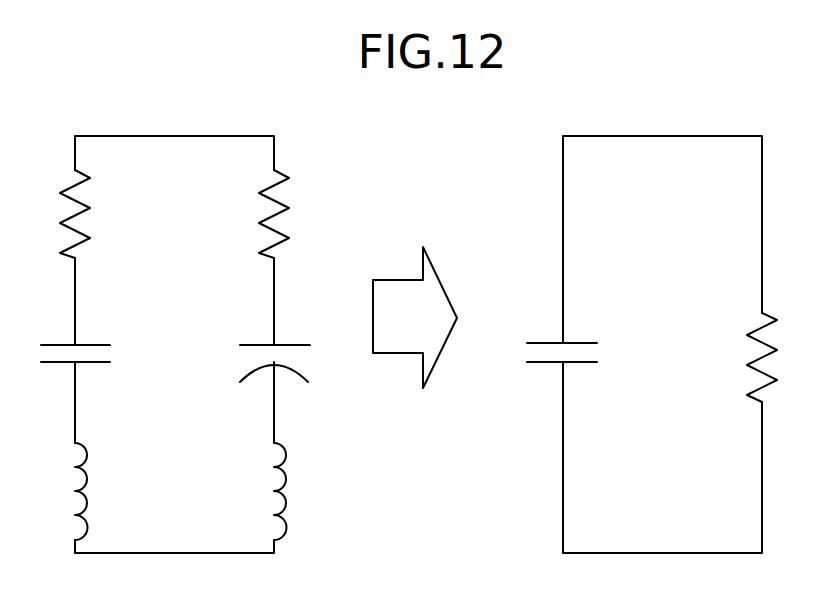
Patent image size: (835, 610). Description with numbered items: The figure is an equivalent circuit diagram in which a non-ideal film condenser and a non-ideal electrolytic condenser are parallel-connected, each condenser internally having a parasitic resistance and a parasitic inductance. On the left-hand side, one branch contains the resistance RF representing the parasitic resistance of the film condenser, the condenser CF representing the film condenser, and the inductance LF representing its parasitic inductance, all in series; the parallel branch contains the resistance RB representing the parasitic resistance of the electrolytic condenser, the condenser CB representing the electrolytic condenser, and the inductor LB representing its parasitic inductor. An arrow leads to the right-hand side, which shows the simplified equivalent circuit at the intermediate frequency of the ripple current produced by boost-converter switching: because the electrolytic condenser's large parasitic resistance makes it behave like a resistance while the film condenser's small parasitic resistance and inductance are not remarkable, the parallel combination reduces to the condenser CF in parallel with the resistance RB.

The resistance RF is at (59, 214).
The condenser CF is at (302, 353).
The inductance LF is at (58, 491).
The resistance RB is at (502, 286).
The condenser CB is at (259, 361).
The inductor LB is at (257, 491).